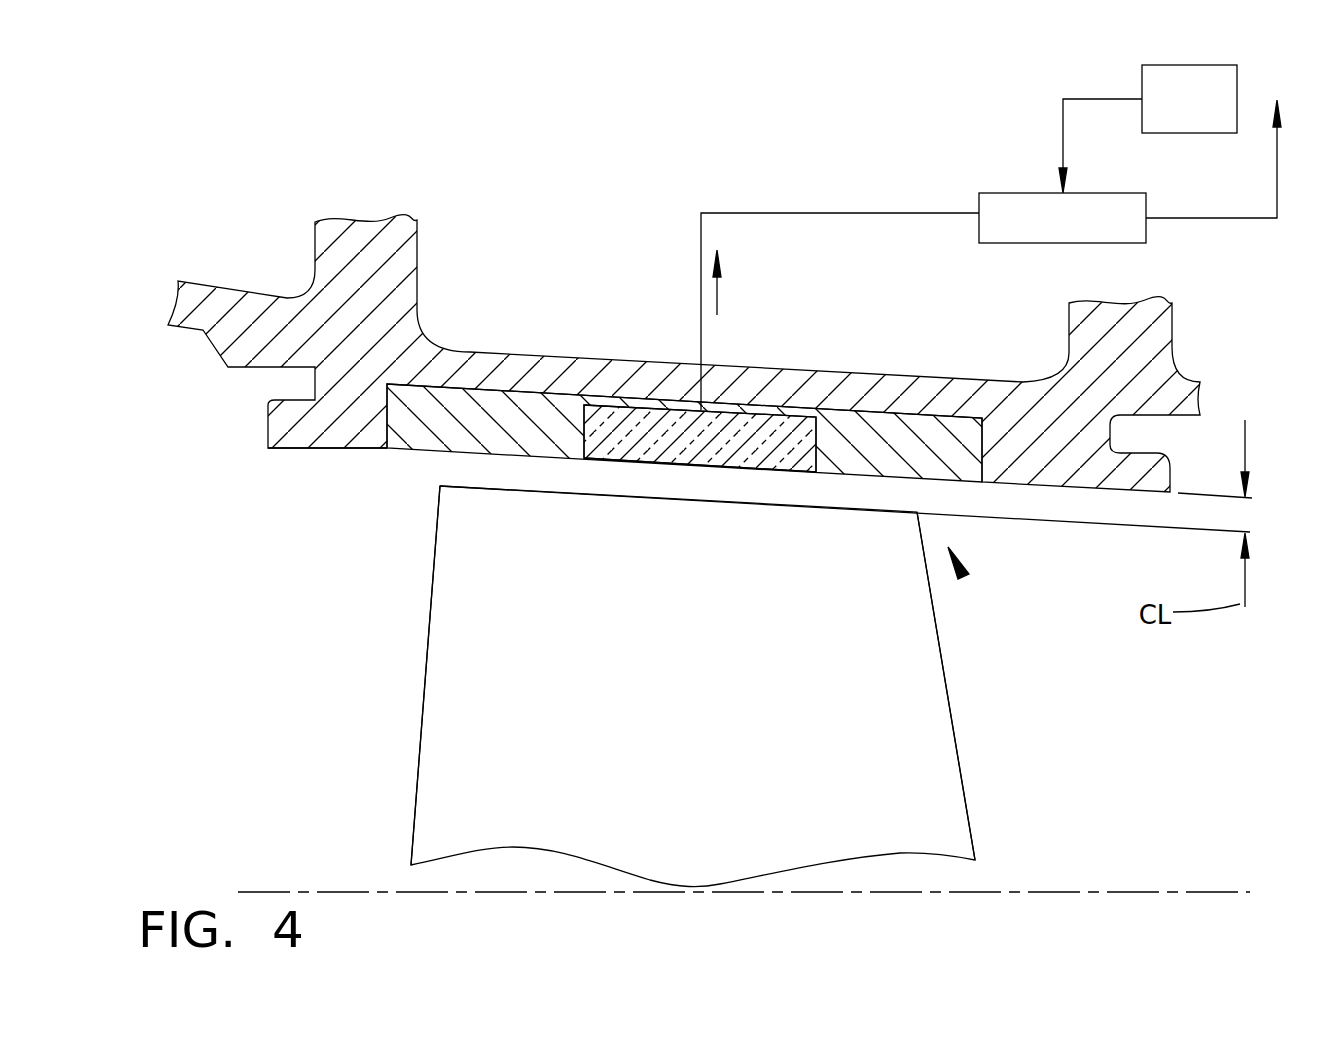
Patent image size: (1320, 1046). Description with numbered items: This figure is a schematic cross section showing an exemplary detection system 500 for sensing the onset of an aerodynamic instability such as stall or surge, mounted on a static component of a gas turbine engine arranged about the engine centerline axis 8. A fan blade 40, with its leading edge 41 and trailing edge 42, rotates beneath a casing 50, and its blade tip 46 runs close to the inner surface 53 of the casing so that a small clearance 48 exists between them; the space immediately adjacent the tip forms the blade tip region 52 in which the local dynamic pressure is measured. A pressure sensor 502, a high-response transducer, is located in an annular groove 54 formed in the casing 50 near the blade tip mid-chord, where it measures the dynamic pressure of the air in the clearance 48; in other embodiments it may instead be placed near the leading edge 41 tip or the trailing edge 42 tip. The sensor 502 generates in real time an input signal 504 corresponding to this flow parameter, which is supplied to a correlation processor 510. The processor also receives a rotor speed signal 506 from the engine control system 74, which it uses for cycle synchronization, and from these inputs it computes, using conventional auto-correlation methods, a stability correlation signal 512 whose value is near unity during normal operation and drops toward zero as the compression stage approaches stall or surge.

The engine centerline axis 8 is at (1115, 866).
The fan blade 40 is at (375, 723).
The leading edge 41 is at (411, 838).
The trailing edge 42 is at (950, 710).
The blade tip 46 is at (493, 487).
The clearance 48 is at (1245, 583).
The casing 50 is at (445, 362).
The blade tip region 52 is at (964, 577).
The inner surface 53 is at (325, 448).
The annular groove 54 is at (533, 400).
The control system 74 is at (1189, 99).
The system for detecting the onset of an aerodynamic instability 500 is at (991, 237).
The pressure sensor 502 is at (718, 462).
The input signal 504 is at (717, 295).
The rotor speed signal 506 is at (1063, 122).
The correlation processor 510 is at (1062, 218).
The stability correlation signal 512 is at (1215, 217).